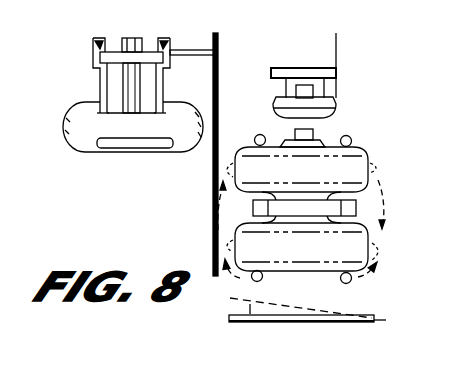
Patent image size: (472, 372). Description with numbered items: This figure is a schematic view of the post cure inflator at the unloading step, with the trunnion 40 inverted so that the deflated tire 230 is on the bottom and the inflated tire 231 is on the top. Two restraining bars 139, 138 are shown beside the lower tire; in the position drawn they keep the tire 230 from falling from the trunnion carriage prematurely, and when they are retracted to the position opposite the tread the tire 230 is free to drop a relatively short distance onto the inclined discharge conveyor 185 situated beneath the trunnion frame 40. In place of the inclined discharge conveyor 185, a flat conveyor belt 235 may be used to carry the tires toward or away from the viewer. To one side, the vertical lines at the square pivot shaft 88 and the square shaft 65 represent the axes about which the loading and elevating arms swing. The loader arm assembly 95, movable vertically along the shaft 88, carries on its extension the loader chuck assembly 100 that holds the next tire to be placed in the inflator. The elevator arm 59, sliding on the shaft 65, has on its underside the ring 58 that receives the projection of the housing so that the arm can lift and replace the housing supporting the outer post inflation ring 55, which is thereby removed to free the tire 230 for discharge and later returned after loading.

The trunnion frame 40 is at (366, 208).
The outer post inflation ring 55 is at (334, 109).
The ring 58 is at (285, 89).
The elevator arm 59 is at (302, 68).
The square shaft 65 is at (338, 47).
The square pivot shaft 88 is at (218, 80).
The loader arm assembly 95 is at (190, 44).
The loader chuck assembly 100 is at (95, 81).
The restraining bar 138 is at (350, 283).
The restraining bar 139 is at (253, 281).
The discharge conveyor 185 is at (250, 325).
The tire 230 is at (367, 234).
The tire 231 is at (366, 150).
The flat conveyor belt 235 is at (297, 323).